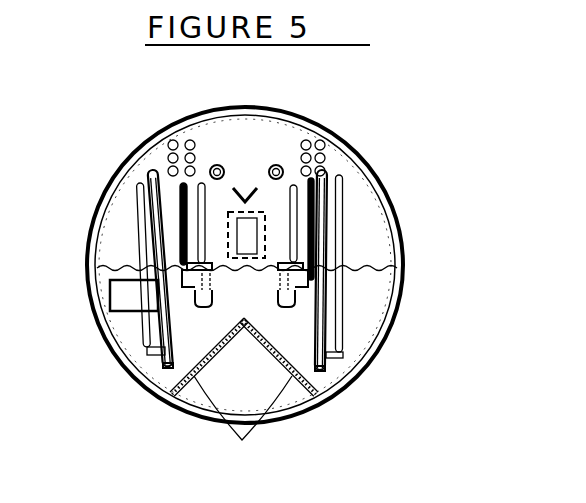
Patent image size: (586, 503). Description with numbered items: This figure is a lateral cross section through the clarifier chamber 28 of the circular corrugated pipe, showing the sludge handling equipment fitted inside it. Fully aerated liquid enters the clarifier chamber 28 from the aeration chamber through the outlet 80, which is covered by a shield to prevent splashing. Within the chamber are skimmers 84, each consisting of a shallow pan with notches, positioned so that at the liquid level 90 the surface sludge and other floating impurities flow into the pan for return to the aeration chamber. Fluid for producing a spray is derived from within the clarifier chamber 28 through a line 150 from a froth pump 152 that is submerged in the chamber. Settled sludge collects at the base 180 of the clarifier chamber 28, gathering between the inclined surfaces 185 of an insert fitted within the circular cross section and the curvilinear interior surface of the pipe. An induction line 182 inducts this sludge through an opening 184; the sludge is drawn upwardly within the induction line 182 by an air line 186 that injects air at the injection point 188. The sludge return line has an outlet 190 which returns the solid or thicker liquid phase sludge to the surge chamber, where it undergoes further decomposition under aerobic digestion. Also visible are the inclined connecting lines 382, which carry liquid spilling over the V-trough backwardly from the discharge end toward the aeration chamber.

The clarifier chamber 28 is at (131, 210).
The line 150 is at (123, 187).
The liquid level 90 is at (377, 262).
The induction line 182 is at (170, 252).
The froth pump 152 is at (122, 293).
The air line 186 is at (146, 327).
The inclined surfaces 185 is at (158, 350).
The air injection point 188 is at (166, 367).
The opening 184 is at (163, 388).
The base of clarifier chamber 180 is at (170, 405).
The skimmer 84 is at (180, 205).
The outlet 190 is at (188, 140).
The connecting lines 382 is at (276, 164).
The outlet 80 is at (245, 268).